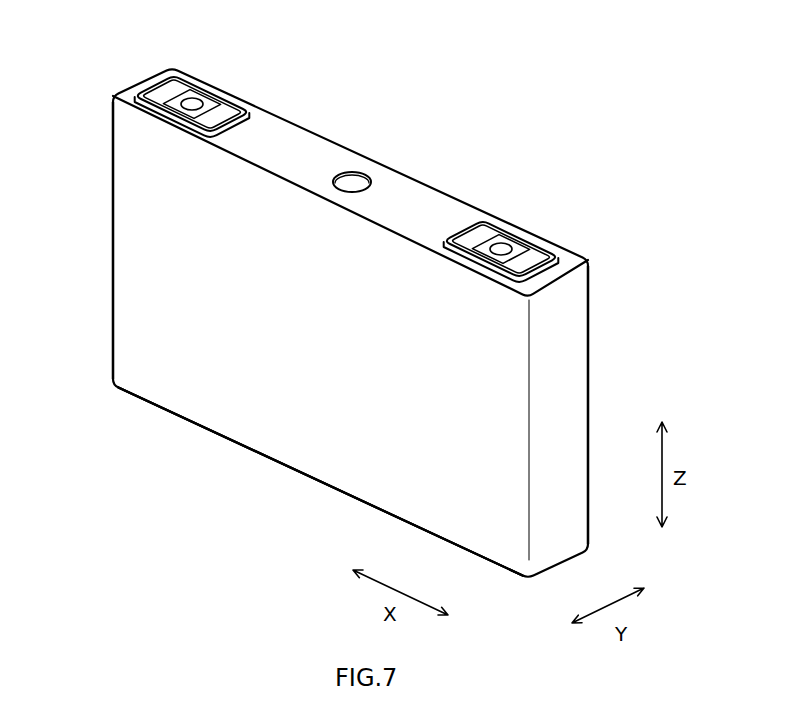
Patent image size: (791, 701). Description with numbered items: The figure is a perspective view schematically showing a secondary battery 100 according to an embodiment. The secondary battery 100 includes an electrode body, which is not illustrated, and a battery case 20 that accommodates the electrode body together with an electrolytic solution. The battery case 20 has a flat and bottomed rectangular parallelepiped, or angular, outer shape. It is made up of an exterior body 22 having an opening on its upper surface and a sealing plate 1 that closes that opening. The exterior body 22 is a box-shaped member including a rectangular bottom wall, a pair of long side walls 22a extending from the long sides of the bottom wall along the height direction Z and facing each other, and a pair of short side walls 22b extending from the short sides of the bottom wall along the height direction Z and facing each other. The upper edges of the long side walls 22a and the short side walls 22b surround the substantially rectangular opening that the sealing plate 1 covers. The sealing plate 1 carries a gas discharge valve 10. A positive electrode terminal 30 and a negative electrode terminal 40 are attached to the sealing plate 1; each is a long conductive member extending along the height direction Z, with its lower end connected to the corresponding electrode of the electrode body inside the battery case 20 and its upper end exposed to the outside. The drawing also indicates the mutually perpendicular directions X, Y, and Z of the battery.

The secondary battery 100 is at (70, 45).
The sealing plate 1 is at (297, 140).
The gas discharge valve 10 is at (357, 180).
The battery case 20 is at (585, 253).
The exterior body 22 is at (365, 453).
The long side wall 22a is at (268, 415).
The short side wall 22b is at (582, 362).
The positive electrode terminal 30 is at (195, 96).
The negative electrode terminal 40 is at (493, 230).